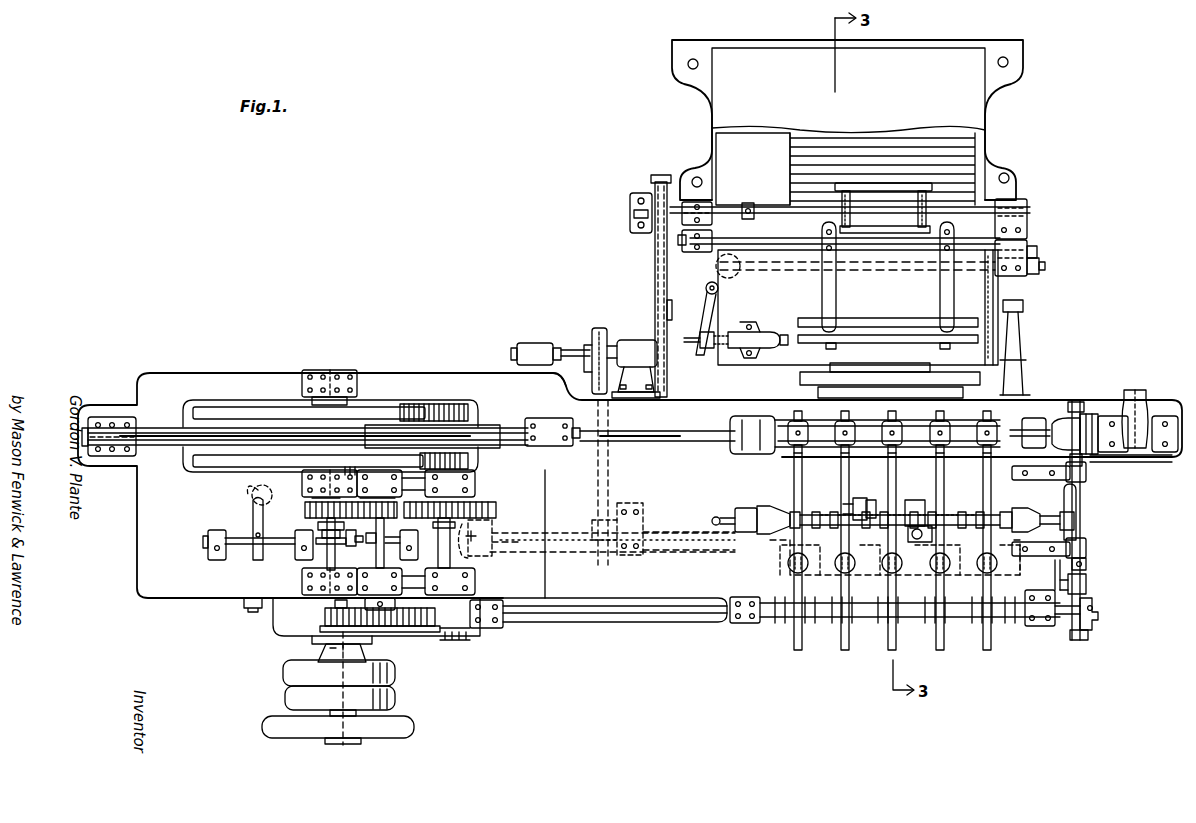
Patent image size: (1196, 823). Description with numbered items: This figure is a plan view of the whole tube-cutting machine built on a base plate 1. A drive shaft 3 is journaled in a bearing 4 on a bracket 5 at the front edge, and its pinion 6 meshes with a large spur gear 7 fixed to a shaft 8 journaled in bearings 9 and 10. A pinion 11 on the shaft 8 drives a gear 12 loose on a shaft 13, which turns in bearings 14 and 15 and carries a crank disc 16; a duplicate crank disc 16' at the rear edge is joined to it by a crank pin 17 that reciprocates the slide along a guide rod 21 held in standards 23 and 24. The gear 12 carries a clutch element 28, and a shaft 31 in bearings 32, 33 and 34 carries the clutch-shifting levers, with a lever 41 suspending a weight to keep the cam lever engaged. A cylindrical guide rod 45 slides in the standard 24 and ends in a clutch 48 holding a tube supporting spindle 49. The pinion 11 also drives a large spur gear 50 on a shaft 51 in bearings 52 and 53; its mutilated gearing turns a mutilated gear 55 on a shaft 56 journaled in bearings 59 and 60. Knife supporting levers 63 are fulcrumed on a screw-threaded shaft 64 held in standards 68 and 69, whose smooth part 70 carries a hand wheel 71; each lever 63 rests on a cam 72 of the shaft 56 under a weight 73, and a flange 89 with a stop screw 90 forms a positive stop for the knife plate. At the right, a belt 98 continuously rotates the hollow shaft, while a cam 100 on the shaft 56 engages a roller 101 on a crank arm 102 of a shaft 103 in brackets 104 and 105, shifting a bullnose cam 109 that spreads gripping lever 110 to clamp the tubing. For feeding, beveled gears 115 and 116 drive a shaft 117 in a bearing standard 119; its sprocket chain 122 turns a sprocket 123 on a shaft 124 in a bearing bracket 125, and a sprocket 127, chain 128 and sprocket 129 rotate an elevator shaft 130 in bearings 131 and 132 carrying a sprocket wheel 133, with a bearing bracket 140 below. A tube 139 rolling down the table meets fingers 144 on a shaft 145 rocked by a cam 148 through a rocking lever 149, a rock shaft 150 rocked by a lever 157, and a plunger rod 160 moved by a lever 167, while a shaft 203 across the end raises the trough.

The base plate 1 is at (137, 495).
The drive shaft 3 is at (298, 718).
The bearing 4 is at (318, 650).
The bracket 5 is at (270, 616).
The pinion 6 is at (325, 615).
The large spur gear 7 is at (425, 632).
The shaft 8 is at (376, 556).
The bearing 9 is at (402, 588).
The bearing 10 is at (360, 470).
The pinion 11 is at (379, 483).
The gear 12 is at (305, 510).
The shaft 13 is at (327, 560).
The bearing 14 is at (302, 588).
The bearing 15 is at (302, 484).
The crank disc 16 is at (330, 448).
The crank disc 16' is at (309, 383).
The crank pin 17 is at (440, 405).
The guide rod 21 is at (160, 430).
The standard 23 is at (118, 402).
The standard 24 is at (543, 418).
The clutch element 28 is at (318, 524).
The shaft 31 is at (237, 546).
The bearing 32 is at (205, 558).
The bearing 33 is at (296, 550).
The bearing 34 is at (415, 560).
The lever 41 is at (253, 505).
The cylindrical guide rod 45 is at (660, 432).
The clutch 48 is at (730, 450).
The tube supporting spindle 49 is at (812, 424).
The large spur gear 50 is at (508, 504).
The shaft 51 is at (440, 525).
The bearing 52 is at (470, 480).
The bearing 53 is at (478, 580).
The mutilated gear 55 is at (470, 630).
The shaft 56 is at (586, 616).
The bearing 59 is at (752, 624).
The bearing 60 is at (1052, 626).
The knife supporting lever 63 is at (794, 477).
The screw-threaded shaft 64 is at (832, 518).
The standard 68 is at (770, 507).
The standard 69 is at (1040, 500).
The smooth part 70 is at (1078, 528).
The hand wheel 71 is at (1080, 498).
The cam 72 is at (884, 640).
The weight 73 is at (788, 565).
The flange 89 is at (848, 420).
The stop screw 90 is at (895, 420).
The belt 98 is at (1134, 390).
The cam 100 is at (1088, 633).
The roller 101 is at (1086, 584).
The crank arm 102 is at (1086, 563).
The shaft 103 is at (1086, 489).
The bracket 104 is at (1086, 547).
The bracket 105 is at (1086, 473).
The bullnose cam 109 is at (1062, 416).
The gripping lever 110 is at (1034, 418).
The beveled gear 115 is at (500, 554).
The beveled gear 116 is at (497, 525).
The shaft 117 is at (680, 532).
The bearing standard 119 is at (642, 502).
The sprocket chain 122 is at (578, 386).
The sprocket 123 is at (614, 316).
The shaft 124 is at (615, 348).
The bearing bracket 125 is at (558, 342).
The sprocket 127 is at (667, 369).
The chain 128 is at (655, 270).
The sprocket 129 is at (655, 248).
The elevator shaft 130 is at (740, 204).
The bearing 131 is at (322, 370).
The bearing 132 is at (1028, 206).
The sprocket wheel 133 is at (834, 193).
The tube 139 is at (962, 155).
The bearing bracket 140 is at (1000, 284).
The finger 144 is at (940, 282).
The shaft 145 is at (768, 240).
The cam 148 is at (804, 336).
The rocking lever 149 is at (838, 346).
The rock shaft 150 is at (1045, 264).
The lever 157 is at (1036, 244).
The plunger rod 160 is at (774, 350).
The lever 167 is at (702, 312).
The shaft 203 is at (1024, 334).